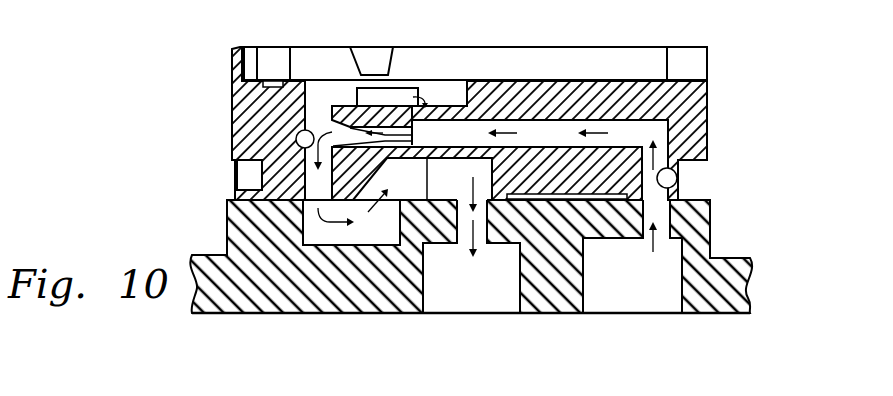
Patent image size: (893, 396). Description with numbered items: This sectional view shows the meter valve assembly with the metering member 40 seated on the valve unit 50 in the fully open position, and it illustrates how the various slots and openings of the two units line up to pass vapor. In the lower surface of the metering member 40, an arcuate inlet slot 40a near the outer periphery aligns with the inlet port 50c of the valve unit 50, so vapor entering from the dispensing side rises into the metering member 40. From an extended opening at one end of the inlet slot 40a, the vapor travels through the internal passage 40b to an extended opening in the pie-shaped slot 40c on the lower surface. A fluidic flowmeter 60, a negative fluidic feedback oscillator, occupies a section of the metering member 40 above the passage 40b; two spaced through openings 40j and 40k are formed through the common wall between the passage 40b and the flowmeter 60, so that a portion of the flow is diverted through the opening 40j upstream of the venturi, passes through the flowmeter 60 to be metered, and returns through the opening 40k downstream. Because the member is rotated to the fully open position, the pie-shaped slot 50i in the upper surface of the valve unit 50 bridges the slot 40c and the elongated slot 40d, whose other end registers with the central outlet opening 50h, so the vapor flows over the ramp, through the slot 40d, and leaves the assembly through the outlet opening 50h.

The metering member 40 is at (217, 31).
The inlet slot 40a is at (678, 176).
The passage 40b is at (597, 125).
The pie-shaped slot 40c is at (285, 145).
The elongated slot 40d is at (430, 177).
The through opening 40j is at (447, 135).
The through opening 40k is at (343, 127).
The valve unit 50 is at (208, 248).
The inlet port 50c is at (619, 292).
The outlet opening 50h is at (459, 292).
The slot 50i is at (342, 241).
The fluidic flowmeter 60 is at (399, 90).